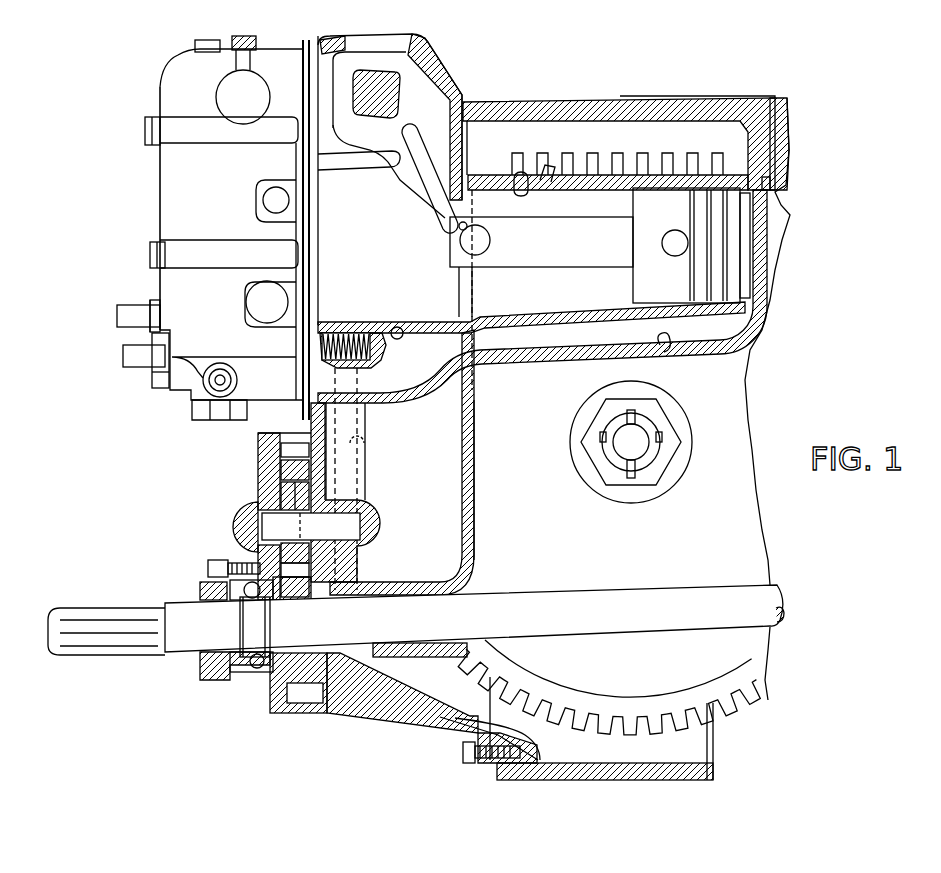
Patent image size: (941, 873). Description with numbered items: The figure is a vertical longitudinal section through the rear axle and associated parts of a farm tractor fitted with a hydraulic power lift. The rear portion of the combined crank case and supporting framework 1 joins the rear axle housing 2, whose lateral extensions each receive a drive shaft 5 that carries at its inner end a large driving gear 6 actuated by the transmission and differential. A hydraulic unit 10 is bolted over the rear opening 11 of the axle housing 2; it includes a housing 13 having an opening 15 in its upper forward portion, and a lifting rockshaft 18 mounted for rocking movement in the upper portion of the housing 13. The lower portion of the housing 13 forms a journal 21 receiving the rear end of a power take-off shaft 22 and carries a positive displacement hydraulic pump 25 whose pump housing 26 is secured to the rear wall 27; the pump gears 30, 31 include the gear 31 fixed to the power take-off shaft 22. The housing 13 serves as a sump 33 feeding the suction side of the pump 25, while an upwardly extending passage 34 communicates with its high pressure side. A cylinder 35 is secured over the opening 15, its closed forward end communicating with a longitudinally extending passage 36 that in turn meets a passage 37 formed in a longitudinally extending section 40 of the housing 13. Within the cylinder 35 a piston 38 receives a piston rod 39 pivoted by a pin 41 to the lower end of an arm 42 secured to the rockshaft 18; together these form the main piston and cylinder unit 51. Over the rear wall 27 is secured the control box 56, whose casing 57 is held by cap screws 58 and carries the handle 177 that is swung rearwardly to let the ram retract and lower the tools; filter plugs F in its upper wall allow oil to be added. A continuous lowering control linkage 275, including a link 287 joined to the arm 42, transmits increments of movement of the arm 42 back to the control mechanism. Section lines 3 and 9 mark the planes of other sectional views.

The combined crank case and supporting framework 1 is at (775, 158).
The rear axle housing 2 is at (632, 100).
The section line 3- 3 is at (130, 48).
The drive shaft 5 is at (638, 438).
The driving gear 6 is at (778, 243).
The section line 9- 9 is at (257, 52).
The hydraulic unit 10 is at (472, 412).
The rear opening 11 is at (500, 720).
The housing 13 is at (478, 482).
The opening 15 is at (462, 283).
The lifting rockshaft 18 is at (387, 92).
The journal 21 is at (404, 657).
The power take-off shaft 22 is at (575, 605).
The hydraulic pump 25 is at (256, 496).
The pump housing 26 is at (268, 477).
The rear wall 27 is at (326, 470).
The pump gear 30 is at (305, 492).
The pump gear 31 is at (322, 597).
The sump 33 is at (448, 535).
The upwardly extending passage 34 is at (360, 440).
The cylinder 35 is at (523, 176).
The longitudinally extending passage 36 is at (664, 347).
The passage 37 is at (392, 328).
The piston 38 is at (640, 200).
The piston rod 39 is at (553, 268).
The longitudinally extending section 40 is at (435, 360).
The pin 41 is at (470, 243).
The arm 42 is at (428, 204).
The main piston and cylinder unit 51 is at (632, 162).
The control box 56 is at (158, 192).
The casing 57 is at (173, 213).
The cap screws 58 is at (148, 124).
The handle 177 is at (236, 52).
The continuous lowering control linkage 275 is at (322, 180).
The link 287 is at (362, 166).
The filter plugs F is at (195, 46).